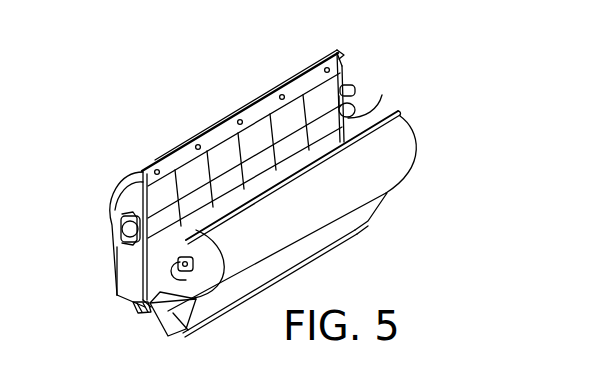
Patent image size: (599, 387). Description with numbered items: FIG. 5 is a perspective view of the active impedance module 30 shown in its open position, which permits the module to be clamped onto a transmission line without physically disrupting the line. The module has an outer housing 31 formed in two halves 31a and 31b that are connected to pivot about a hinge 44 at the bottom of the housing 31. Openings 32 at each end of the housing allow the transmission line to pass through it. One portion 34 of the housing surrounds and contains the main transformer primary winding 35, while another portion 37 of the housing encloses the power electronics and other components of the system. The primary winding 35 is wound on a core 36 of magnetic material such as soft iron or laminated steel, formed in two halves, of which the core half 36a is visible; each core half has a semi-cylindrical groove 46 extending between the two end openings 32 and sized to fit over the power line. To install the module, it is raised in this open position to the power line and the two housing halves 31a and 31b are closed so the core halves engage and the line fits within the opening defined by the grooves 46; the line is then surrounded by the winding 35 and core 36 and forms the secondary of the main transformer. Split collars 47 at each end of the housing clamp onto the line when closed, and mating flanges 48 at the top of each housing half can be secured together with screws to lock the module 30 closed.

The active impedance module 30 is at (96, 222).
The outer housing 31 is at (137, 180).
The housing half 31a is at (128, 283).
The housing half 31b is at (190, 331).
The opening 32 is at (118, 231).
The portion of the housing 34 is at (370, 180).
The main transformer primary winding 35 is at (213, 162).
The core 36 is at (339, 56).
The core half 36a is at (288, 112).
The portion of the housing 37 is at (288, 263).
The hinge 44 is at (133, 303).
The semi-cylindrical groove 46 is at (372, 94).
The split collar 47 is at (346, 84).
The mating flange 48 is at (272, 92).